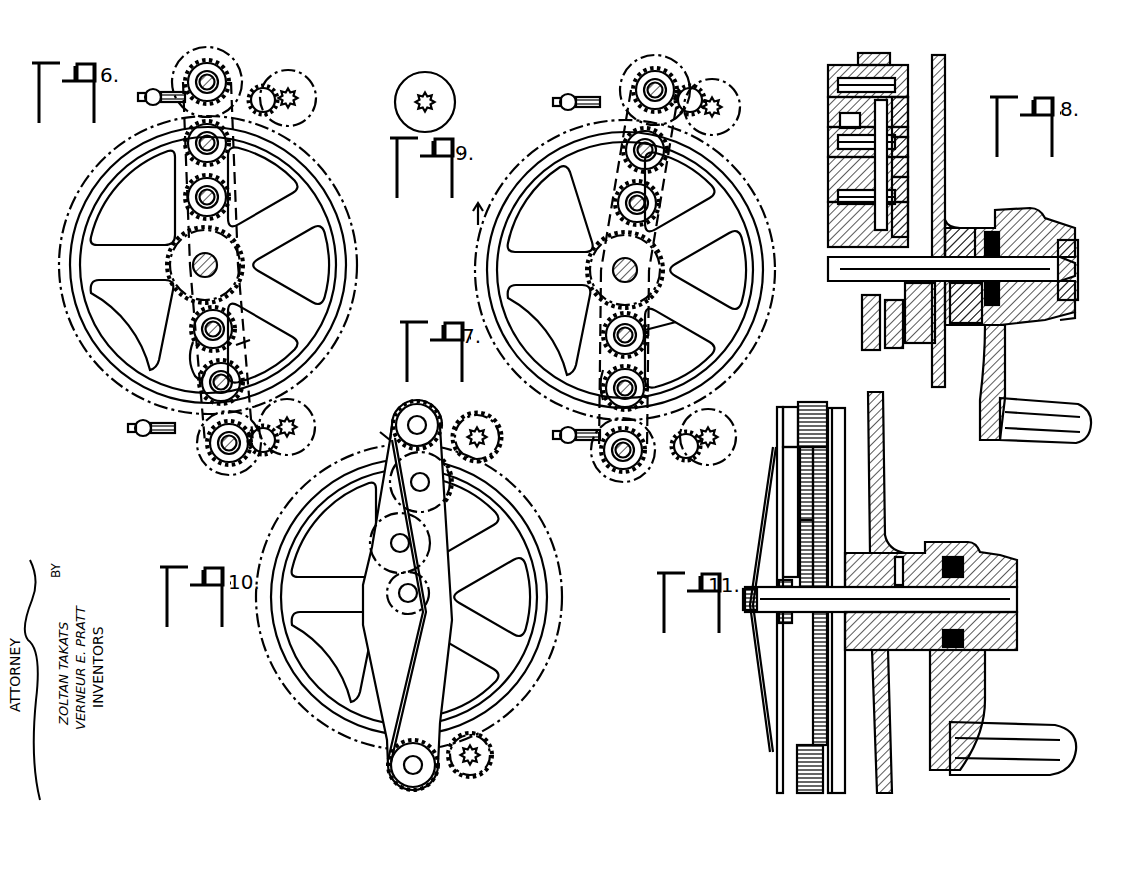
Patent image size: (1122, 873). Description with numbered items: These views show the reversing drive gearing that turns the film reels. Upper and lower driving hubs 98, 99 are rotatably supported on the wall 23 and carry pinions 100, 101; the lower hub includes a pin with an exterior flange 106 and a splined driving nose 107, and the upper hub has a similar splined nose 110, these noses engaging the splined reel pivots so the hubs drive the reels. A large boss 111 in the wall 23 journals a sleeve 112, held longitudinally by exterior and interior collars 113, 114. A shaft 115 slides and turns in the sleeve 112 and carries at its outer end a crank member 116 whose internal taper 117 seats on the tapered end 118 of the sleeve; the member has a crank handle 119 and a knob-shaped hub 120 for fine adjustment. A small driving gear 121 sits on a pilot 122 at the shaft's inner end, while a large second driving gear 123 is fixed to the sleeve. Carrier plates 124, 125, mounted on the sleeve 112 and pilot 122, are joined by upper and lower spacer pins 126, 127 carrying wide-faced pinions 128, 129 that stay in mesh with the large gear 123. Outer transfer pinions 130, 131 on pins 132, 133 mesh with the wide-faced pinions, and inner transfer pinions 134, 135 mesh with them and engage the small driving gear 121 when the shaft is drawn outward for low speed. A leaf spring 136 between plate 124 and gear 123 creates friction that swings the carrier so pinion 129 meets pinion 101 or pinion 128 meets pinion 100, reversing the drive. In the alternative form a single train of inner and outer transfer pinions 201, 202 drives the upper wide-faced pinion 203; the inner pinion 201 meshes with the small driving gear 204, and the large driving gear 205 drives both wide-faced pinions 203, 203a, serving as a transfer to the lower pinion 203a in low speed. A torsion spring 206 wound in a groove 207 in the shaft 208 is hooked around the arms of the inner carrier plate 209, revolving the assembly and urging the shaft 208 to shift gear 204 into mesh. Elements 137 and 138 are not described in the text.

In FIG. 8, the wall 23 is at (945, 150).
In FIG. 11, the wall 23 is at (886, 592).
In FIG. 6, the upper driving hub 98 is at (305, 85).
In FIG. 9, the upper driving hub 98 is at (450, 118).
In FIG. 7, the upper driving hub 98 is at (730, 88).
In FIG. 6, the lower driving hub 99 is at (305, 423).
In FIG. 7, the lower driving hub 99 is at (722, 415).
In FIG. 6, the pinion 100 is at (268, 85).
In FIG. 7, the pinion 100 is at (696, 86).
In FIG. 10, the pinion 100 is at (484, 418).
In FIG. 6, the pinion 101 is at (268, 452).
In FIG. 7, the pinion 101 is at (684, 460).
In FIG. 10, the pinion 101 is at (475, 776).
In FIG. 9, the exterior flange 106 is at (452, 95).
In FIG. 6, the splined driving nose 107 is at (290, 420).
In FIG. 7, the splined driving nose 107 is at (708, 447).
In FIG. 6, the splined nose 110 is at (293, 92).
In FIG. 9, the splined nose 110 is at (432, 96).
In FIG. 7, the splined nose 110 is at (720, 104).
In FIG. 8, the large boss 111 is at (958, 228).
In FIG. 8, the sleeve 112 is at (985, 228).
In FIG. 11, the sleeve 112 is at (910, 553).
In FIG. 8, the exterior collar 113 is at (992, 305).
In FIG. 8, the interior collar 114 is at (925, 325).
In FIG. 8, the shaft 115 is at (966, 300).
In FIG. 8, the crank member 116 is at (1005, 340).
In FIG. 11, the crank member 116 is at (975, 655).
In FIG. 8, the internal taper 117 is at (1062, 320).
In FIG. 8, the tapered end 118 is at (999, 236).
In FIG. 8, the crank handle 119 is at (1050, 443).
In FIG. 11, the crank handle 119 is at (1013, 748).
In FIG. 8, the hub 120 is at (1078, 298).
In FIG. 6, the small driving gear 121 is at (240, 240).
In FIG. 7, the small driving gear 121 is at (655, 240).
In FIG. 8, the small driving gear 121 is at (868, 312).
In FIG. 6, the pilot 122 is at (205, 277).
In FIG. 7, the pilot 122 is at (625, 282).
In FIG. 8, the pilot 122 is at (828, 269).
In FIG. 6, the second driving gear 123 is at (356, 263).
In FIG. 7, the second driving gear 123 is at (476, 268).
In FIG. 8, the second driving gear 123 is at (918, 116).
In FIG. 8, the carrier plate 124 is at (915, 157).
In FIG. 6, the carrier plate 125 is at (258, 336).
In FIG. 7, the carrier plate 125 is at (676, 321).
In FIG. 8, the carrier plate 125 is at (828, 180).
In FIG. 6, the upper spacer pin 126 is at (200, 80).
In FIG. 7, the upper spacer pin 126 is at (648, 86).
In FIG. 8, the upper spacer pin 126 is at (828, 78).
In FIG. 6, the lower spacer pin 127 is at (222, 452).
In FIG. 7, the lower spacer pin 127 is at (617, 458).
In FIG. 6, the wide-faced pinion 128 is at (236, 58).
In FIG. 7, the wide-faced pinion 128 is at (630, 62).
In FIG. 8, the wide-faced pinion 128 is at (890, 58).
In FIG. 6, the wide-faced pinion 129 is at (232, 476).
In FIG. 7, the wide-faced pinion 129 is at (618, 482).
In FIG. 6, the outer transfer pinion 130 is at (228, 118).
In FIG. 7, the outer transfer pinion 130 is at (672, 130).
In FIG. 8, the outer transfer pinion 130 is at (840, 120).
In FIG. 6, the outer transfer pinion 131 is at (238, 365).
In FIG. 7, the outer transfer pinion 131 is at (645, 372).
In FIG. 6, the pin 132 is at (218, 140).
In FIG. 7, the pin 132 is at (640, 153).
In FIG. 8, the pin 132 is at (830, 150).
In FIG. 6, the pin 133 is at (206, 380).
In FIG. 7, the pin 133 is at (603, 382).
In FIG. 6, the inner transfer pinion 134 is at (228, 190).
In FIG. 7, the inner transfer pinion 134 is at (655, 196).
In FIG. 8, the inner transfer pinion 134 is at (850, 232).
In FIG. 6, the inner transfer pinion 135 is at (228, 313).
In FIG. 7, the inner transfer pinion 135 is at (643, 350).
In FIG. 8, the leaf spring 136 is at (916, 190).
In FIG. 6, the bolt 137 is at (153, 105).
In FIG. 7, the bolt 137 is at (576, 91).
In FIG. 6, the bolt 138 is at (147, 437).
In FIG. 7, the bolt 138 is at (570, 444).
In FIG. 10, the inner transfer pinion 201 is at (360, 545).
In FIG. 11, the inner transfer pinion 201 is at (807, 552).
In FIG. 10, the outer transfer pinion 202 is at (452, 470).
In FIG. 11, the outer transfer pinion 202 is at (800, 470).
In FIG. 10, the upper wide-faced pinion 203 is at (432, 405).
In FIG. 11, the upper wide-faced pinion 203 is at (818, 402).
In FIG. 10, the lower wide-faced pinion 203a is at (420, 790).
In FIG. 11, the lower wide-faced pinion 203a is at (800, 790).
In FIG. 10, the small driving gear 204 is at (392, 612).
In FIG. 11, the small driving gear 204 is at (785, 623).
In FIG. 10, the large driving gear 205 is at (376, 431).
In FIG. 11, the large driving gear 205 is at (822, 520).
In FIG. 10, the torsion spring 206 is at (410, 670).
In FIG. 11, the torsion spring 206 is at (762, 570).
In FIG. 11, the groove 207 is at (748, 610).
In FIG. 10, the shaft 208 is at (399, 593).
In FIG. 11, the shaft 208 is at (1017, 590).
In FIG. 10, the inner carrier plate 209 is at (446, 665).
In FIG. 11, the inner carrier plate 209 is at (781, 700).